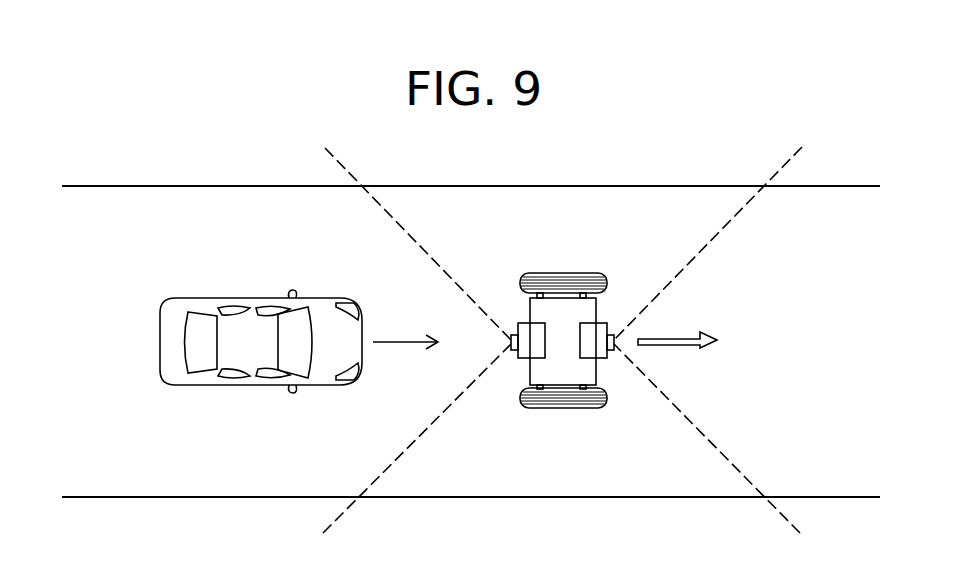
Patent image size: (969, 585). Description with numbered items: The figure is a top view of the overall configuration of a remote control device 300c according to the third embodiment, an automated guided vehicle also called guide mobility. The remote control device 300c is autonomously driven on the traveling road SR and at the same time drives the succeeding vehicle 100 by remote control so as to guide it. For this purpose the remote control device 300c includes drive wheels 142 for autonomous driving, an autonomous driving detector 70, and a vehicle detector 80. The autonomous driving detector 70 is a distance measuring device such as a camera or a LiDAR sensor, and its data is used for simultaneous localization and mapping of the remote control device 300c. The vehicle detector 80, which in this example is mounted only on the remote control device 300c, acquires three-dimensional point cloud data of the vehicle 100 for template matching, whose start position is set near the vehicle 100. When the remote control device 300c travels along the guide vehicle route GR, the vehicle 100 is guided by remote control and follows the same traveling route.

The vehicle 100 is at (260, 384).
The remote control device 300c is at (570, 322).
The drive wheels 142 is at (548, 273).
The vehicle detector 80 is at (525, 350).
The autonomous driving detector 70 is at (598, 348).
The traveling road SR is at (125, 478).
The guide vehicle route GR is at (697, 342).